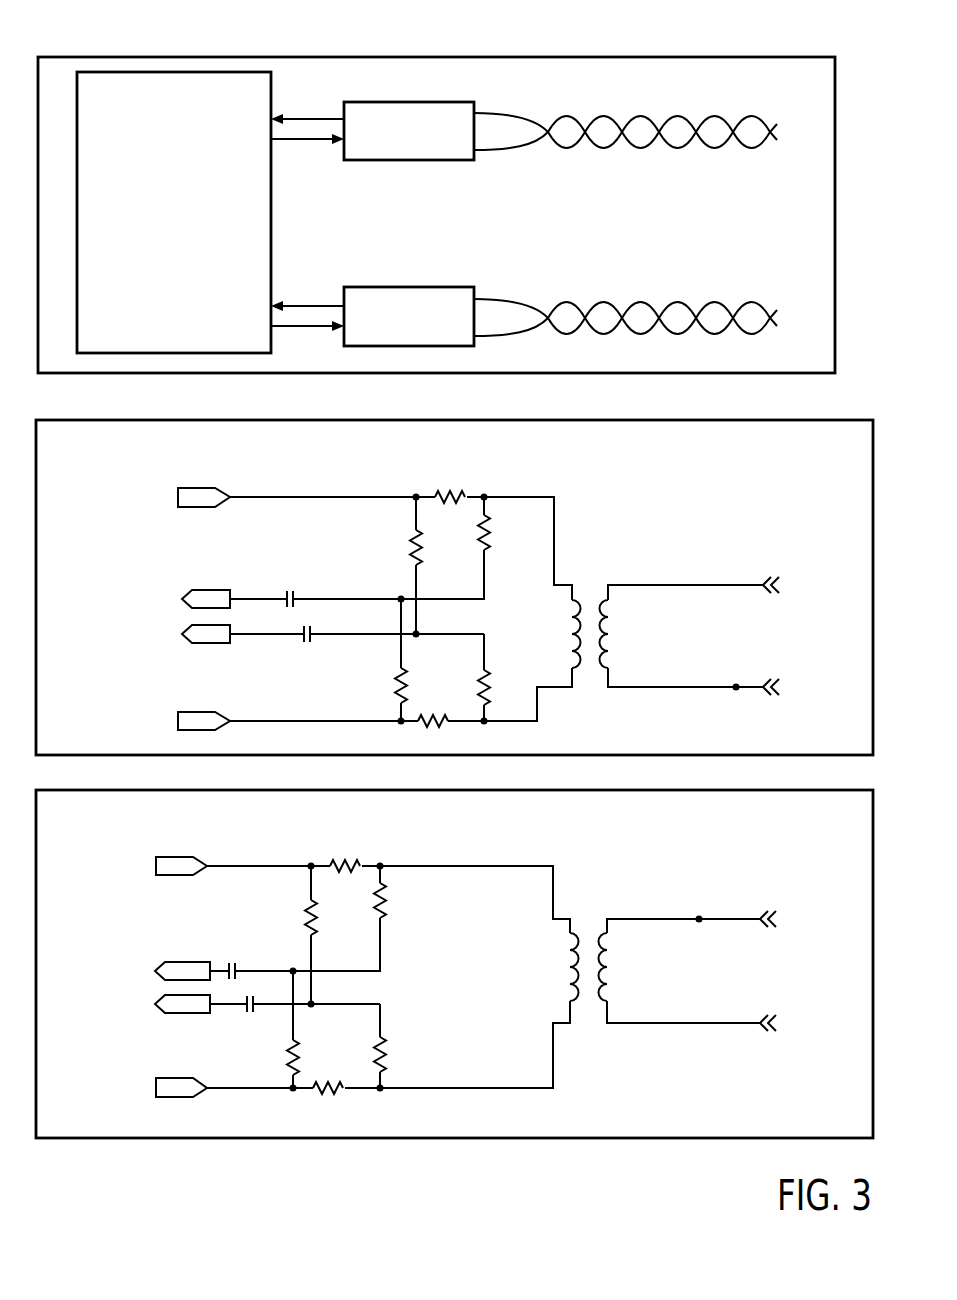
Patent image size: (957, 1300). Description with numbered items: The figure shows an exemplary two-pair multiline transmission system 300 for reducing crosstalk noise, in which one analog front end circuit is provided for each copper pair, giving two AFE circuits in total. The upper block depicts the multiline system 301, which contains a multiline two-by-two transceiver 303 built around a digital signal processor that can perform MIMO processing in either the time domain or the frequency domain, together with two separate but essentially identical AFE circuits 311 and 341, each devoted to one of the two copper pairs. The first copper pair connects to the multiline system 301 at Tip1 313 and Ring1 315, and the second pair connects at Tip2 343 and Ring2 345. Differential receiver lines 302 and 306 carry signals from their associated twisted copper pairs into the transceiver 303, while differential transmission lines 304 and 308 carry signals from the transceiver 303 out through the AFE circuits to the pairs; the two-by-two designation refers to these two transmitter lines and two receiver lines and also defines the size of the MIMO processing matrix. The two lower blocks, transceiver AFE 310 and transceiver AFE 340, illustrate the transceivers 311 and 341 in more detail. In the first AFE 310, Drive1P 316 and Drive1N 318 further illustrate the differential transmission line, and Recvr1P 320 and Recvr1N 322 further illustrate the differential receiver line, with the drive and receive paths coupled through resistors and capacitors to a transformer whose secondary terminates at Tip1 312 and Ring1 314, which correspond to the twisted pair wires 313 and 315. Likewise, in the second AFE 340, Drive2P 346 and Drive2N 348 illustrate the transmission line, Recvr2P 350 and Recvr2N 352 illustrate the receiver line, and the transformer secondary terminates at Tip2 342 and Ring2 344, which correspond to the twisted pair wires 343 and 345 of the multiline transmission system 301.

The multiline transceiver system 300 is at (862, 18).
The multiline system 301 is at (821, 90).
The differential receiver line 302 is at (307, 109).
The multiline 2×2 transceiver 303 is at (192, 328).
The differential transmission line 304 is at (307, 152).
The differential receiver line 306 is at (307, 297).
The differential transmission line 308 is at (307, 339).
The transceiver AFE 310 is at (89, 453).
The AFE circuit 311 is at (420, 102).
The Tip1 312 is at (778, 572).
The Tip1 313 is at (625, 121).
The Ring1 314 is at (778, 697).
The Ring1 315 is at (625, 147).
The Drive1P 316 is at (203, 487).
The Drive1N 318 is at (202, 712).
The Recvr1P 320 is at (210, 588).
The Recvr1N 322 is at (215, 645).
The transceiver AFE 340 is at (89, 823).
The AFE circuit 341 is at (420, 287).
The Tip2 342 is at (780, 905).
The Tip2 343 is at (625, 305).
The Ring2 344 is at (773, 1037).
The Ring2 345 is at (625, 330).
The Drive2P 346 is at (187, 852).
The Drive2N 348 is at (173, 1077).
The Recvr2P 350 is at (177, 957).
The Recvr2N 352 is at (175, 1015).